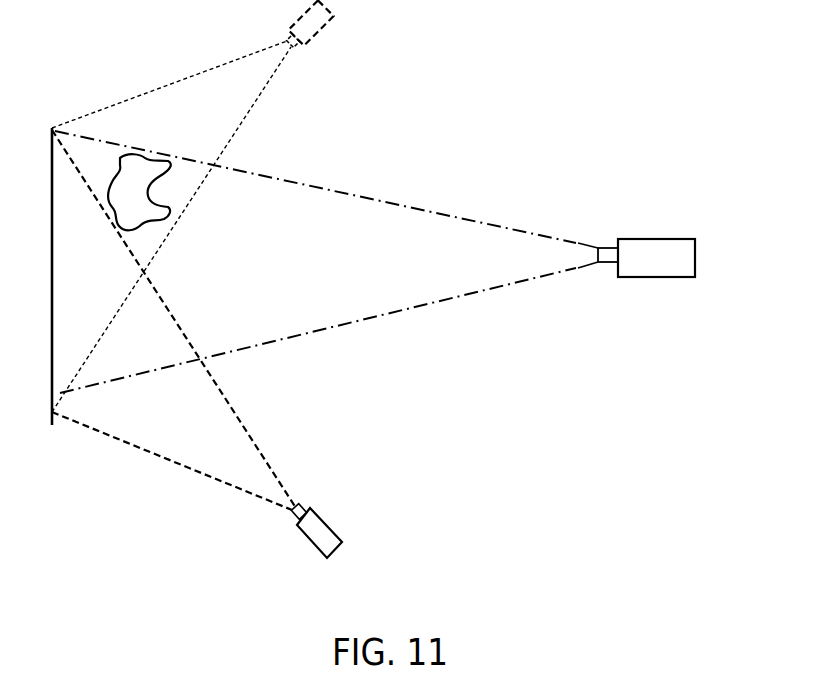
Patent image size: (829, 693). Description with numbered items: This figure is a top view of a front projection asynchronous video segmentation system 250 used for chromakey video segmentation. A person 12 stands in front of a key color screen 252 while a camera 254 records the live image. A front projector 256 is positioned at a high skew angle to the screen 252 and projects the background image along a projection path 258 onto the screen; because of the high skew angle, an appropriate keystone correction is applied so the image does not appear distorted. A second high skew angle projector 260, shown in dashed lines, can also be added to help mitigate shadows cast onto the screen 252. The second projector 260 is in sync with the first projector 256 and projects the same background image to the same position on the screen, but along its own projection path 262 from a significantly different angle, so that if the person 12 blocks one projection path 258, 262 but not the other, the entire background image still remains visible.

The front projection asynchronous video segmentation system 250 is at (528, 108).
The key color screen 252 is at (52, 232).
The person 12 is at (142, 192).
The camera 254 is at (647, 260).
The front projector 256 is at (324, 534).
The projection path 258 is at (165, 302).
The second high skew angle projector 260 is at (315, 22).
The projection path 262 is at (233, 133).